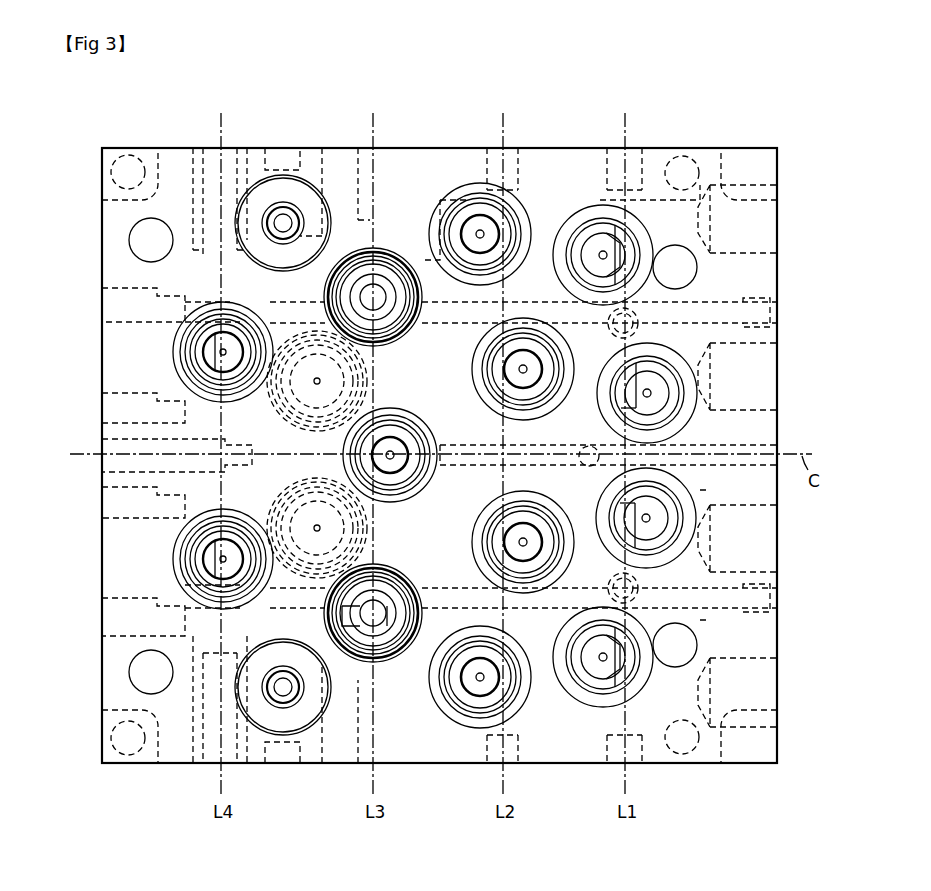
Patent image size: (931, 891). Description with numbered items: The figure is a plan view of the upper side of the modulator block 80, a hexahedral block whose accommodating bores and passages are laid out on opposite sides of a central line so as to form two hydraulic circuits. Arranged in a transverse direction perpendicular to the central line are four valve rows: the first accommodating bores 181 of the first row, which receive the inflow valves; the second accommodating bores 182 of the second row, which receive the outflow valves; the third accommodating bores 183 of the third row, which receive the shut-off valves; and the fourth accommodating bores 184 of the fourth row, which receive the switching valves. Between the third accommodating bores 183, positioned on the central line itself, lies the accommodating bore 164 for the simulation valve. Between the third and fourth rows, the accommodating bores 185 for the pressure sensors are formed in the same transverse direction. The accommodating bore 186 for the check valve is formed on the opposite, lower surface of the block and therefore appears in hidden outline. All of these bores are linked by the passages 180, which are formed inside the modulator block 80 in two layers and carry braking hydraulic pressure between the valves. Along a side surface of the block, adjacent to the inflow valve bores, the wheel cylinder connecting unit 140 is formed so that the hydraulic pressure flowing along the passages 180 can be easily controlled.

The modulator block 80 is at (439, 455).
The wheel cylinder connecting unit 140 is at (768, 224).
The accommodating bore 164 is at (422, 488).
The passages 180 is at (450, 323).
The first accommodating bores 181 is at (590, 213).
The second accommodating bores 182 is at (446, 197).
The third accommodating bores 183 is at (384, 251).
The fourth accommodating bores 184 is at (174, 354).
The accommodating bores 185 is at (310, 179).
The accommodating bore 186 is at (368, 378).